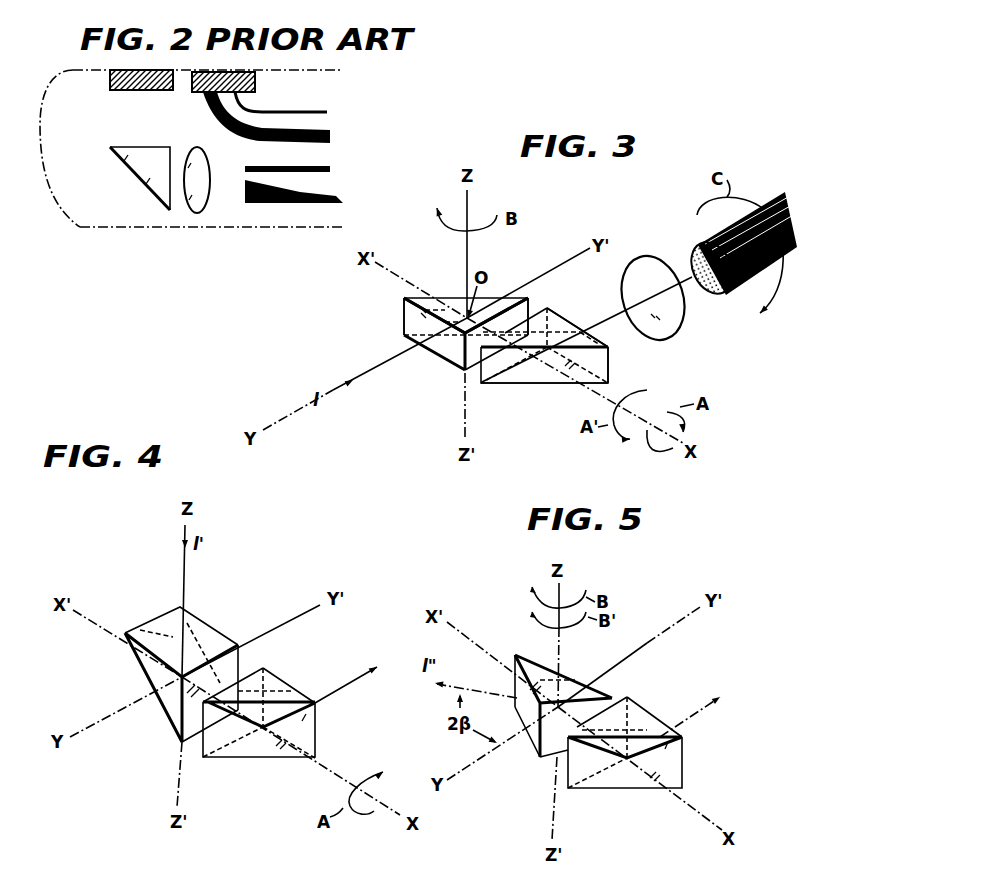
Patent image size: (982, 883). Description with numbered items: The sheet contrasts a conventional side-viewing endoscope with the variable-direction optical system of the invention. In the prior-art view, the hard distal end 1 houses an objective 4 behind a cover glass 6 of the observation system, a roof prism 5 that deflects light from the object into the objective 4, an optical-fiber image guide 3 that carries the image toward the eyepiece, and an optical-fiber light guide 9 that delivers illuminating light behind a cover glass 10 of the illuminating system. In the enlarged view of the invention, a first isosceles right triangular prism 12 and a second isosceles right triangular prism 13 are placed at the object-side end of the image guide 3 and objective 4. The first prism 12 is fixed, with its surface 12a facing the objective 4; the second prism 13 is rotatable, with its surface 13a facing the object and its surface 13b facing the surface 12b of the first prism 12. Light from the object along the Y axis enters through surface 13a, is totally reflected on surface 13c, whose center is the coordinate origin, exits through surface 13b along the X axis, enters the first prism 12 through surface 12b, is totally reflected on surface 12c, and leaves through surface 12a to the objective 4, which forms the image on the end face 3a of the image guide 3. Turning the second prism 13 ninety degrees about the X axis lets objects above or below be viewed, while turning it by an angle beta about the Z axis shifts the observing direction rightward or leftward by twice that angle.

In FIG. 2, the hard distal end 1 is at (123, 230).
In FIG. 2, the image guide 3 is at (313, 183).
In FIG. 3, the image guide 3 is at (721, 246).
In FIG. 3, the end face of the image guide 3a is at (693, 258).
In FIG. 2, the objective 4 is at (210, 183).
In FIG. 3, the objective 4 is at (688, 318).
In FIG. 2, the roof prism 5 is at (130, 172).
In FIG. 2, the cover glass of the optical observation system 6 is at (112, 91).
In FIG. 2, the light guide 9 is at (296, 92).
In FIG. 2, the cover glass of the illuminating system 10 is at (208, 98).
In FIG. 3, the first isosceles right triangular prism 12 is at (572, 370).
In FIG. 4, the first isosceles right triangular prism 12 is at (252, 760).
In FIG. 5, the first isosceles right triangular prism 12 is at (655, 710).
In FIG. 3, the surface of the first prism facing the objective 12a is at (608, 357).
In FIG. 3, the surface of the first prism facing the second prism 12b is at (547, 310).
In FIG. 3, the reflecting surface of the first prism 12c is at (517, 384).
In FIG. 3, the second isosceles right triangular prism 13 is at (463, 331).
In FIG. 4, the second isosceles right triangular prism 13 is at (146, 671).
In FIG. 5, the second isosceles right triangular prism 13 is at (570, 680).
In FIG. 3, the surface of the second prism facing the object 13a is at (410, 323).
In FIG. 3, the surface of the second prism facing the first prism 13b is at (517, 307).
In FIG. 3, the reflecting surface of the second prism 13c is at (463, 317).